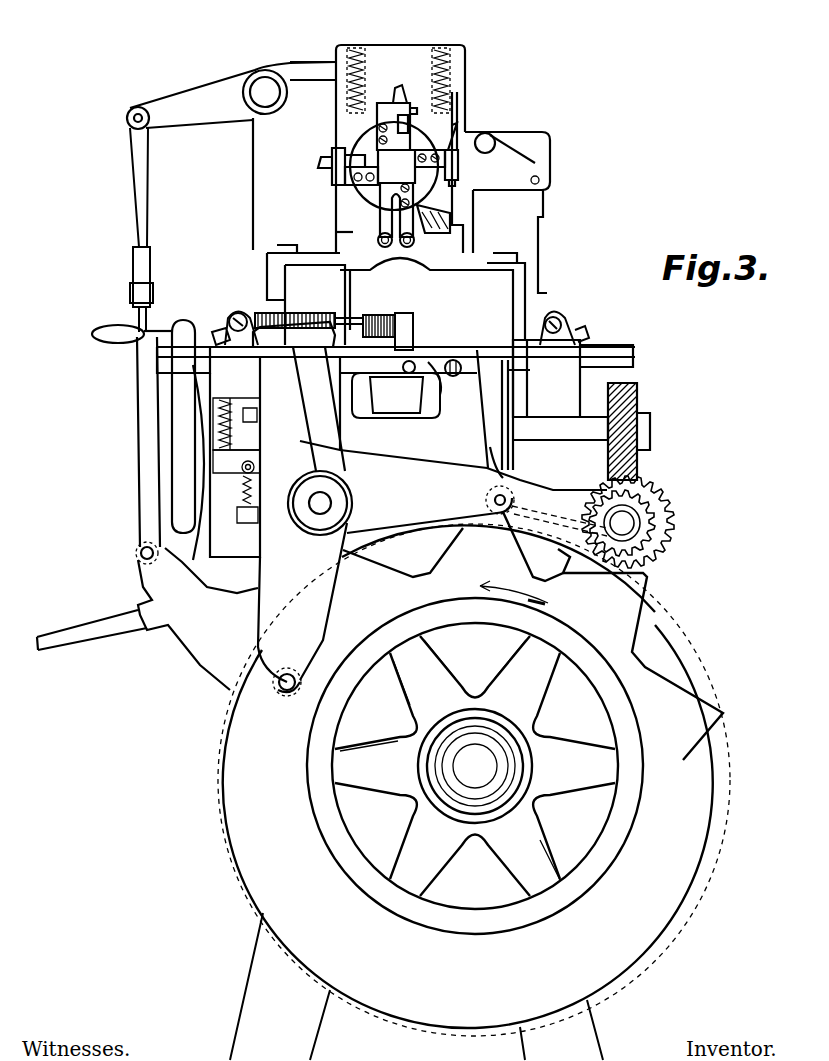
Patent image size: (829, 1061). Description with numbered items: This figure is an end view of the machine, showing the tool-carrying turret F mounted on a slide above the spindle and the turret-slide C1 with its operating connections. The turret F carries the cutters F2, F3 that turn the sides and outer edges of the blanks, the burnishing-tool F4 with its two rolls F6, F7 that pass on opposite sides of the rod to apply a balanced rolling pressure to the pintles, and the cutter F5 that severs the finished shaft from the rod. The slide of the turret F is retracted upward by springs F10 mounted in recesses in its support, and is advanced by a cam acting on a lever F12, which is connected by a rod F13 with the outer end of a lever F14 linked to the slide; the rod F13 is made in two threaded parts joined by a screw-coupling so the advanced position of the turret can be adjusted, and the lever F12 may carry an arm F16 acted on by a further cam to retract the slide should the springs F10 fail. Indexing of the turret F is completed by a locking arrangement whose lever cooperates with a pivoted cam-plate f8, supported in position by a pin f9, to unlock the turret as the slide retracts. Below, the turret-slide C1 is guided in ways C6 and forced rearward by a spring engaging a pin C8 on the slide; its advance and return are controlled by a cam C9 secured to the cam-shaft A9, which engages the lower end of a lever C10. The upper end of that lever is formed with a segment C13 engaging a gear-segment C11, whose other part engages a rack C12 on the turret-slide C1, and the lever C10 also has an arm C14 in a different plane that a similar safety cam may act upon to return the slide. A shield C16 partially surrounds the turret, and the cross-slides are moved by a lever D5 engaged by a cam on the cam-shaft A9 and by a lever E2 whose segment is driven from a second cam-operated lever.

The springs F10 is at (370, 62).
The lever F14 is at (180, 90).
The cutter F3 is at (397, 96).
The turret F is at (412, 141).
The cutter F2 is at (335, 166).
The cutter F5 is at (462, 178).
The cam-plate f8 is at (520, 148).
The pin f9 is at (540, 180).
The burnishing-tool F4 is at (380, 216).
The roll F6 is at (377, 242).
The roll F7 is at (415, 241).
The arm F16 is at (151, 268).
The shield C16 is at (505, 284).
The gear-segment C11 is at (340, 319).
The rack C12 is at (408, 322).
The turret-slide C1 is at (420, 355).
The pin C8 is at (460, 362).
The lever D5 is at (236, 314).
The lever E2 is at (562, 336).
The segment C13 is at (271, 352).
The ways C6 is at (344, 373).
The arm C14 is at (396, 467).
The rod F13 is at (139, 442).
The lever C10 is at (305, 583).
The lever F12 is at (162, 622).
The cam C9 is at (474, 786).
The cam-shaft A9 is at (475, 766).